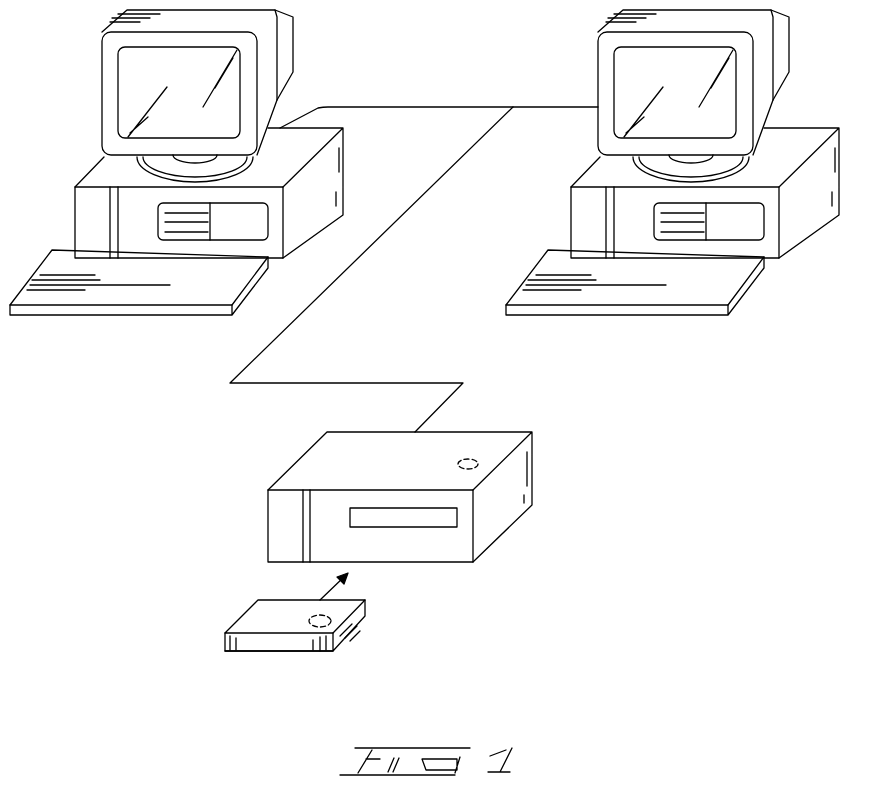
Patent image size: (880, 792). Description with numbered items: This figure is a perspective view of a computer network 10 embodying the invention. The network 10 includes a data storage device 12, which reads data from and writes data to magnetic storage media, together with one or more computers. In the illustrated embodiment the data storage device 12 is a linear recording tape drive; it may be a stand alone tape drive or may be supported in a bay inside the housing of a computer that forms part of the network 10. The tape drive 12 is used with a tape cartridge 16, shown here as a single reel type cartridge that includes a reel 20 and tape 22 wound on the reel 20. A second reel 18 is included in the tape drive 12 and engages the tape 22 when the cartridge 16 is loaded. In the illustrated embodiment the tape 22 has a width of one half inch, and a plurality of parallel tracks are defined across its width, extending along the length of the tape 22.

The computer network 10 is at (677, 513).
The data storage device 12 is at (316, 466).
The tape cartridge 16 is at (345, 631).
The second reel 18 is at (477, 458).
The reel 20 is at (306, 659).
The tape 22 is at (368, 608).